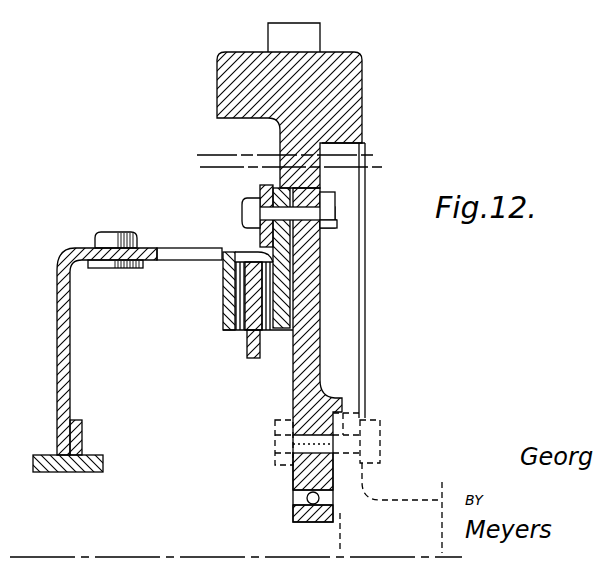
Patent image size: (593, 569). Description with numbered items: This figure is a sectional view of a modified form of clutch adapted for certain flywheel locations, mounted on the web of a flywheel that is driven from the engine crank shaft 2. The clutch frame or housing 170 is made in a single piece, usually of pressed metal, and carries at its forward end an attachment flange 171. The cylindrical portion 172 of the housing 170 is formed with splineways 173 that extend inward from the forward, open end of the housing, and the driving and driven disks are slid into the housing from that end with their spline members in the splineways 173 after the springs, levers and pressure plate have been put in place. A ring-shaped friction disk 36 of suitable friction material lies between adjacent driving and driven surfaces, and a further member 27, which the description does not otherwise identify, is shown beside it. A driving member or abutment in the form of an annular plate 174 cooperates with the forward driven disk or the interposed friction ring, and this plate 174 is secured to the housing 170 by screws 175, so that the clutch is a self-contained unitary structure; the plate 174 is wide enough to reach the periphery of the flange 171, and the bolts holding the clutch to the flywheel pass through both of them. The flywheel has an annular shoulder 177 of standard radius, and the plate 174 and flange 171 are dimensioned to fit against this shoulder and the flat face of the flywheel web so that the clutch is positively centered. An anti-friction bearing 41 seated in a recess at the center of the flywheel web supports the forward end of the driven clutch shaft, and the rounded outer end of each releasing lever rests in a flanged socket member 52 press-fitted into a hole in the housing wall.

The engine crank shaft 2 is at (375, 515).
The pulley 27 is at (225, 308).
The friction disk 36 is at (242, 333).
The anti-friction bearing 41 is at (295, 488).
The socket member 52 is at (108, 245).
The clutch frame or housing 170 is at (332, 212).
The attachment flange 171 is at (258, 188).
The cylindrical portion 172 is at (145, 248).
The splineways 173 is at (187, 248).
The annular plate 174 is at (293, 303).
The screws 175 is at (322, 250).
The annular shoulder 177 is at (262, 186).